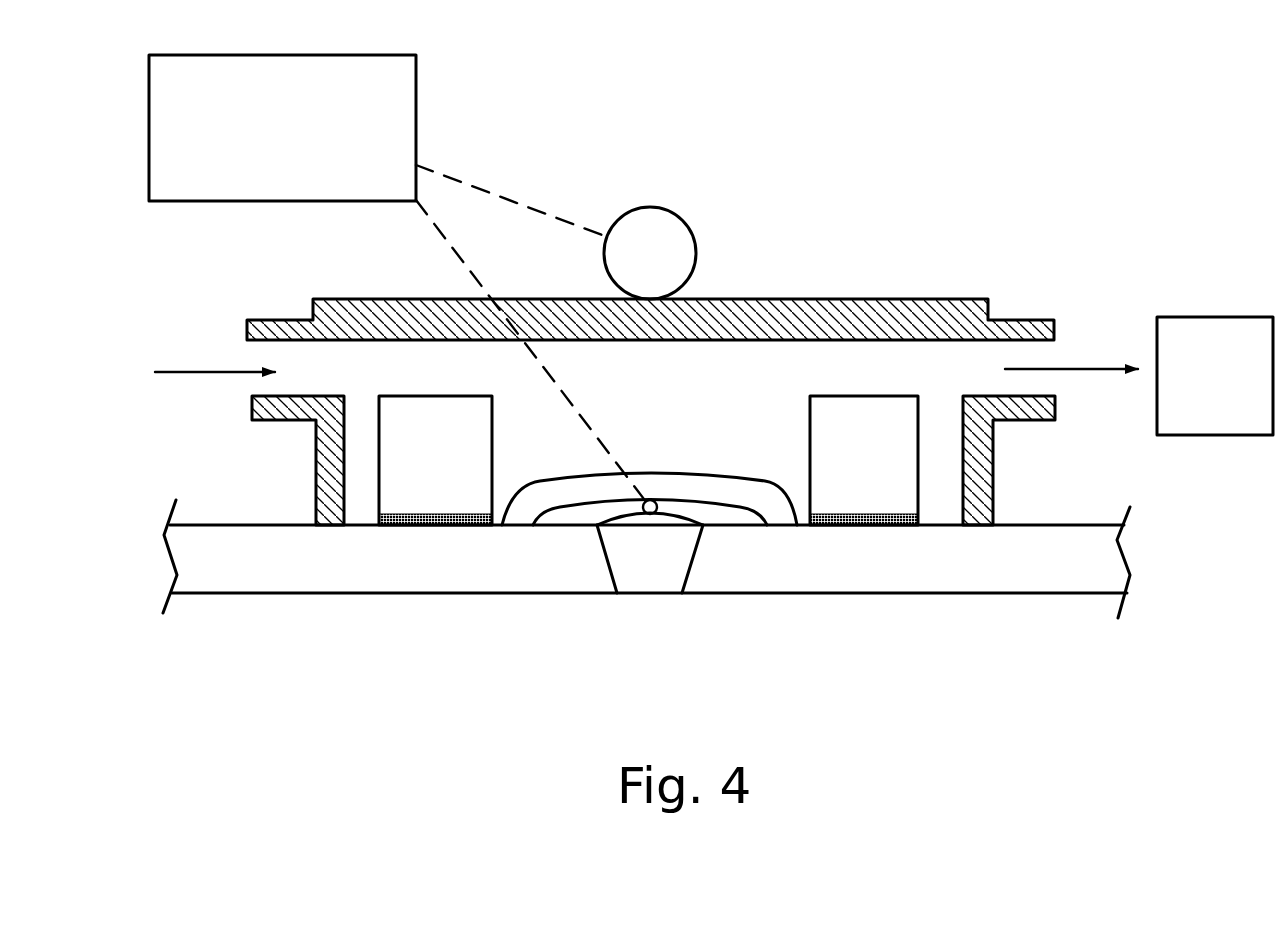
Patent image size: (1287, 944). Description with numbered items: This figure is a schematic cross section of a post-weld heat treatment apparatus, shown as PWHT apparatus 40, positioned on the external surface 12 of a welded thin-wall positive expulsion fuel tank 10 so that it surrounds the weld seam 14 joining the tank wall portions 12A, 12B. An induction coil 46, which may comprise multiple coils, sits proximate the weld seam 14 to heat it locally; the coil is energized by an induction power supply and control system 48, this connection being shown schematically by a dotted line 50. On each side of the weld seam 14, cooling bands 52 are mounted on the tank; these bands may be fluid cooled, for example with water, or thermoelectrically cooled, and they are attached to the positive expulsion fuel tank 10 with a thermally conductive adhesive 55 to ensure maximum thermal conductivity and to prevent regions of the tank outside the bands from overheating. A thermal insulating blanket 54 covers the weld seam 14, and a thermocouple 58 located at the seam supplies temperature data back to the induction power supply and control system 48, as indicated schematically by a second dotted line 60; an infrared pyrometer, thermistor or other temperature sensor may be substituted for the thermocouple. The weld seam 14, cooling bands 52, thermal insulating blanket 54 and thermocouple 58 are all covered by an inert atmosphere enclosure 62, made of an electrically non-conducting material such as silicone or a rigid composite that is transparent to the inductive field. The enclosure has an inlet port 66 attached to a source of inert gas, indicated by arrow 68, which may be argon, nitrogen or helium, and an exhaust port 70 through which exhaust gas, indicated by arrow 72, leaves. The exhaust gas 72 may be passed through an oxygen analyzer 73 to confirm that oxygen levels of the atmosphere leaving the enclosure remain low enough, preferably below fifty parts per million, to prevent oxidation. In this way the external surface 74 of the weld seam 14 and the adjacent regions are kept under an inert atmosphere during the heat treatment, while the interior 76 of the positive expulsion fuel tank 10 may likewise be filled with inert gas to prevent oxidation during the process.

The positive expulsion fuel tank 10 is at (1166, 565).
The external surface 12 is at (1038, 525).
The first workpiece part 12A is at (248, 560).
The second workpiece part 12B is at (930, 577).
The weld seam 14 is at (650, 565).
The PWHT apparatus 40 is at (910, 150).
The induction coil 46 is at (667, 232).
The induction power supply and control system 48 is at (293, 118).
The dotted line 50 is at (478, 188).
The cooling bands 52 is at (433, 415).
The thermal insulating blanket 54 is at (577, 490).
The thermally conductive adhesive 55 is at (438, 520).
The thermocouple 58 is at (652, 497).
The dotted line 60 is at (458, 252).
The inert atmosphere enclosure 62 is at (900, 287).
The inlet port 66 is at (287, 313).
The inert gas 68 is at (205, 372).
The exhaust port 70 is at (1029, 314).
The exhaust gas 72 is at (1066, 369).
The oxygen analyzer 73 is at (1230, 378).
The external surface of weld seam 74 is at (687, 500).
The interior 76 is at (710, 695).